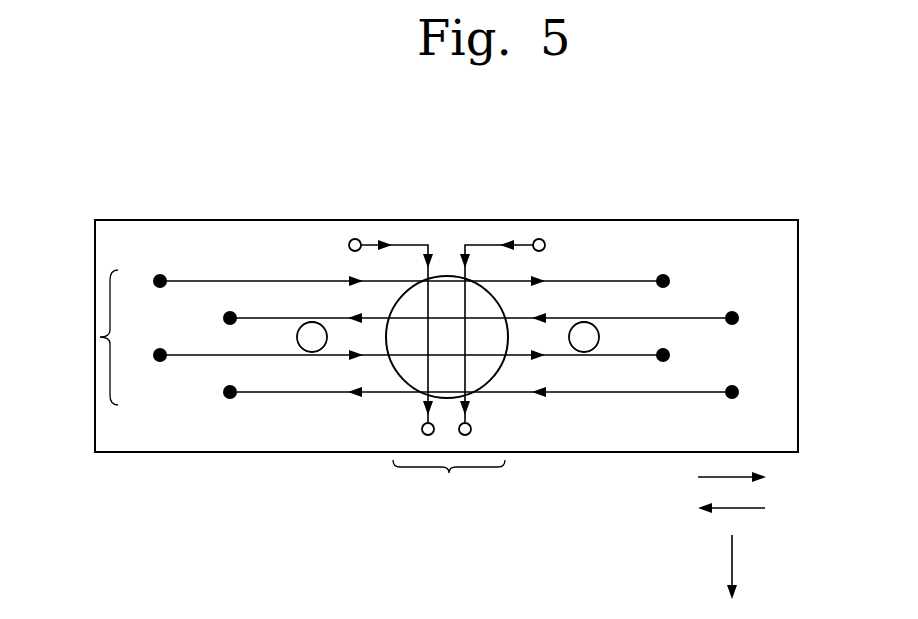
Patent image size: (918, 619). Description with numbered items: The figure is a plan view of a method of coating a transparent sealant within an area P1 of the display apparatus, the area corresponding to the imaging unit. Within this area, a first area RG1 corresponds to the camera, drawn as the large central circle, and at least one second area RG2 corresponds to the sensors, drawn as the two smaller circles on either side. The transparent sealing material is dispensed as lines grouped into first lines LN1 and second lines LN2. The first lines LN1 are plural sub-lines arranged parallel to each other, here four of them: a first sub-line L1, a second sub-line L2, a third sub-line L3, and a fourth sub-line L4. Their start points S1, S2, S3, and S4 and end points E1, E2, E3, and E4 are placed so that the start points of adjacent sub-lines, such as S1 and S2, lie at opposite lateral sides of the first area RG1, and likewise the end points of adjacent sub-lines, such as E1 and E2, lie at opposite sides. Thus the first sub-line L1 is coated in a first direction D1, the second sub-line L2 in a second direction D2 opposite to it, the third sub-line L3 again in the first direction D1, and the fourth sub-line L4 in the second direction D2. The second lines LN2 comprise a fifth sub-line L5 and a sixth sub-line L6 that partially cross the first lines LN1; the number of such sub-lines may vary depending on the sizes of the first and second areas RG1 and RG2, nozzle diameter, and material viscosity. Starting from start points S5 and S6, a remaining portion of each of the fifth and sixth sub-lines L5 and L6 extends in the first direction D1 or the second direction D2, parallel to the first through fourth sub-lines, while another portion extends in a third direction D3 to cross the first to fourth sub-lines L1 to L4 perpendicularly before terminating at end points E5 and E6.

The area P1 is at (800, 337).
The first area RG1 is at (447, 275).
The second area RG2 is at (312, 322).
The first sub-line L1 is at (567, 281).
The second sub-line L2 is at (598, 318).
The third sub-line L3 is at (612, 355).
The fourth sub-line L4 is at (595, 392).
The fifth sub-line L5 is at (405, 243).
The sixth sub-line L6 is at (490, 243).
The start point S1 is at (143, 281).
The start point S2 is at (749, 318).
The start point S3 is at (143, 355).
The start point S4 is at (749, 392).
The start point S5 is at (338, 245).
The start point S6 is at (555, 245).
The end point E1 is at (679, 281).
The end point E2 is at (213, 318).
The end point E3 is at (679, 355).
The end point E4 is at (213, 392).
The end point E5 is at (411, 429).
The end point E6 is at (482, 429).
The first lines LN1 is at (98, 337).
The second lines LN2 is at (449, 483).
The first direction D1 is at (749, 477).
The second direction D2 is at (749, 508).
The third direction D3 is at (763, 567).